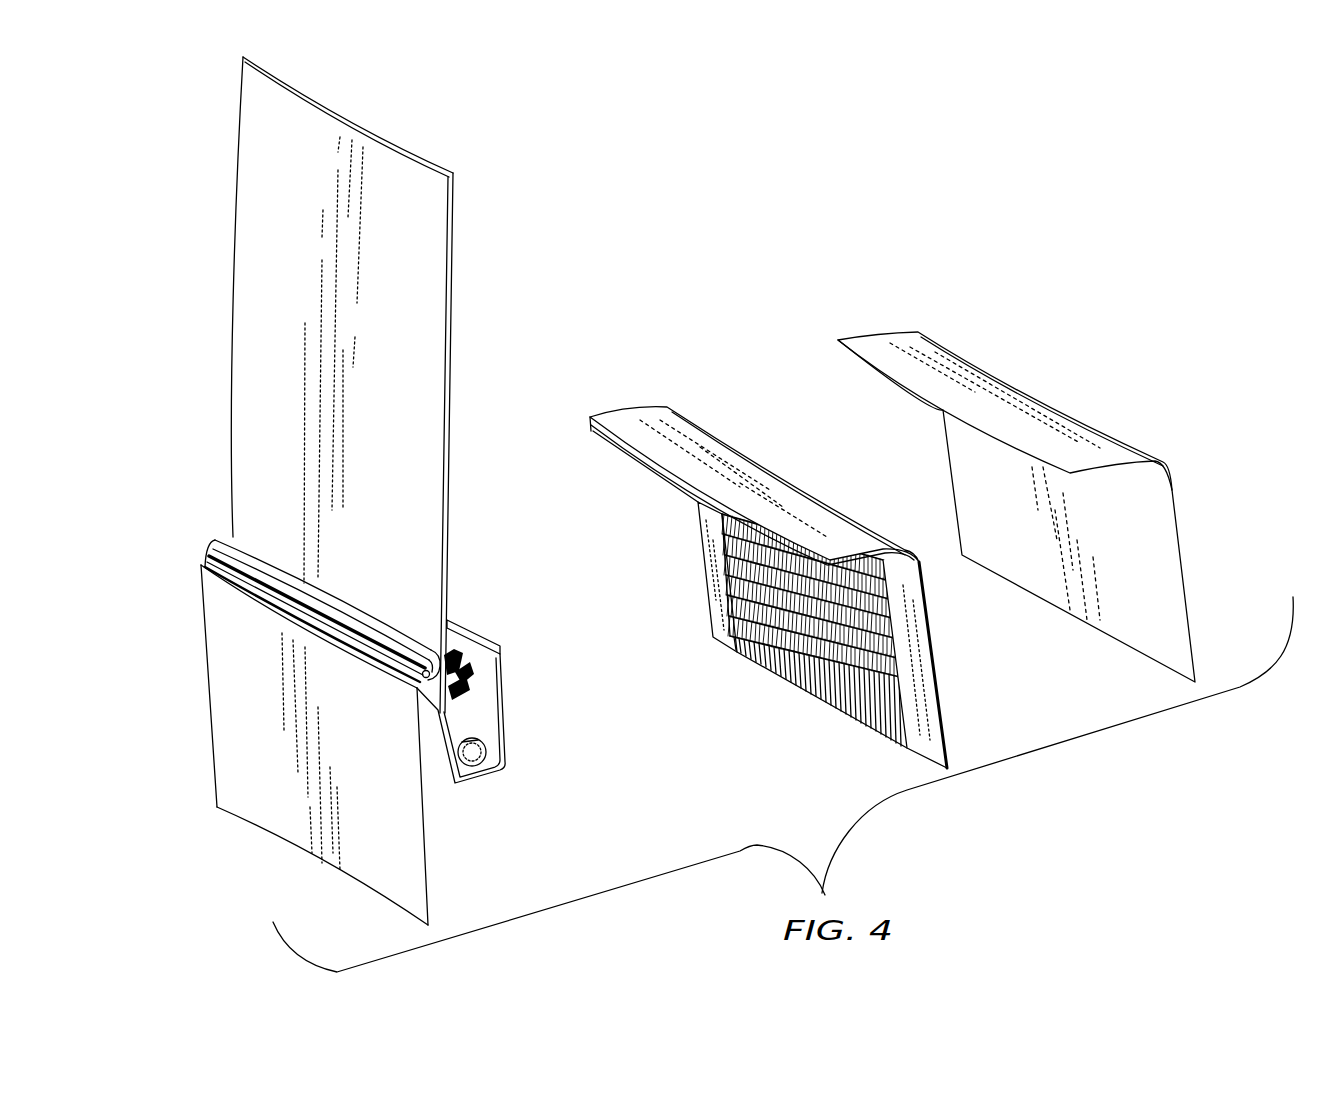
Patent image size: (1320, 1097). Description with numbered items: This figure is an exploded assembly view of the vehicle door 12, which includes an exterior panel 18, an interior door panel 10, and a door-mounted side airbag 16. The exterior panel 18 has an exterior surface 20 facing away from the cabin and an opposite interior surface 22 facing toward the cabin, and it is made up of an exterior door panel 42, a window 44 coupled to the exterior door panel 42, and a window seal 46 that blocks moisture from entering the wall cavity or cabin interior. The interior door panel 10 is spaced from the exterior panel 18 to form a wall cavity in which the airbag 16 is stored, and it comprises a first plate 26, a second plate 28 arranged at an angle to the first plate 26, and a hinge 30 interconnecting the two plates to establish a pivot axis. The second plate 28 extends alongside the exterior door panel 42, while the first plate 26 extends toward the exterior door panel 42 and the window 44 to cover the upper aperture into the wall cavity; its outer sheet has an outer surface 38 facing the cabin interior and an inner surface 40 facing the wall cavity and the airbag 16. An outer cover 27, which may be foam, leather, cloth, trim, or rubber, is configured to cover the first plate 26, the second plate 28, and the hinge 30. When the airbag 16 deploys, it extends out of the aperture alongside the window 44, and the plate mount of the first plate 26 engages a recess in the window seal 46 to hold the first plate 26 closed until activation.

The interior door panel 10 is at (778, 300).
The door 12 is at (972, 179).
The airbag 16 is at (506, 702).
The exterior panel 18 is at (183, 670).
The exterior surface 20 is at (240, 810).
The interior surface 22 is at (413, 887).
The first plate 26 is at (635, 396).
The outer cover 27 is at (1039, 404).
The second plate 28 is at (952, 705).
The hinge 30 is at (748, 455).
The outer surface 38 is at (940, 668).
The inner surface 40 is at (922, 745).
The exterior door panel 42 is at (240, 712).
The window 44 is at (230, 237).
The window seal 46 is at (206, 534).